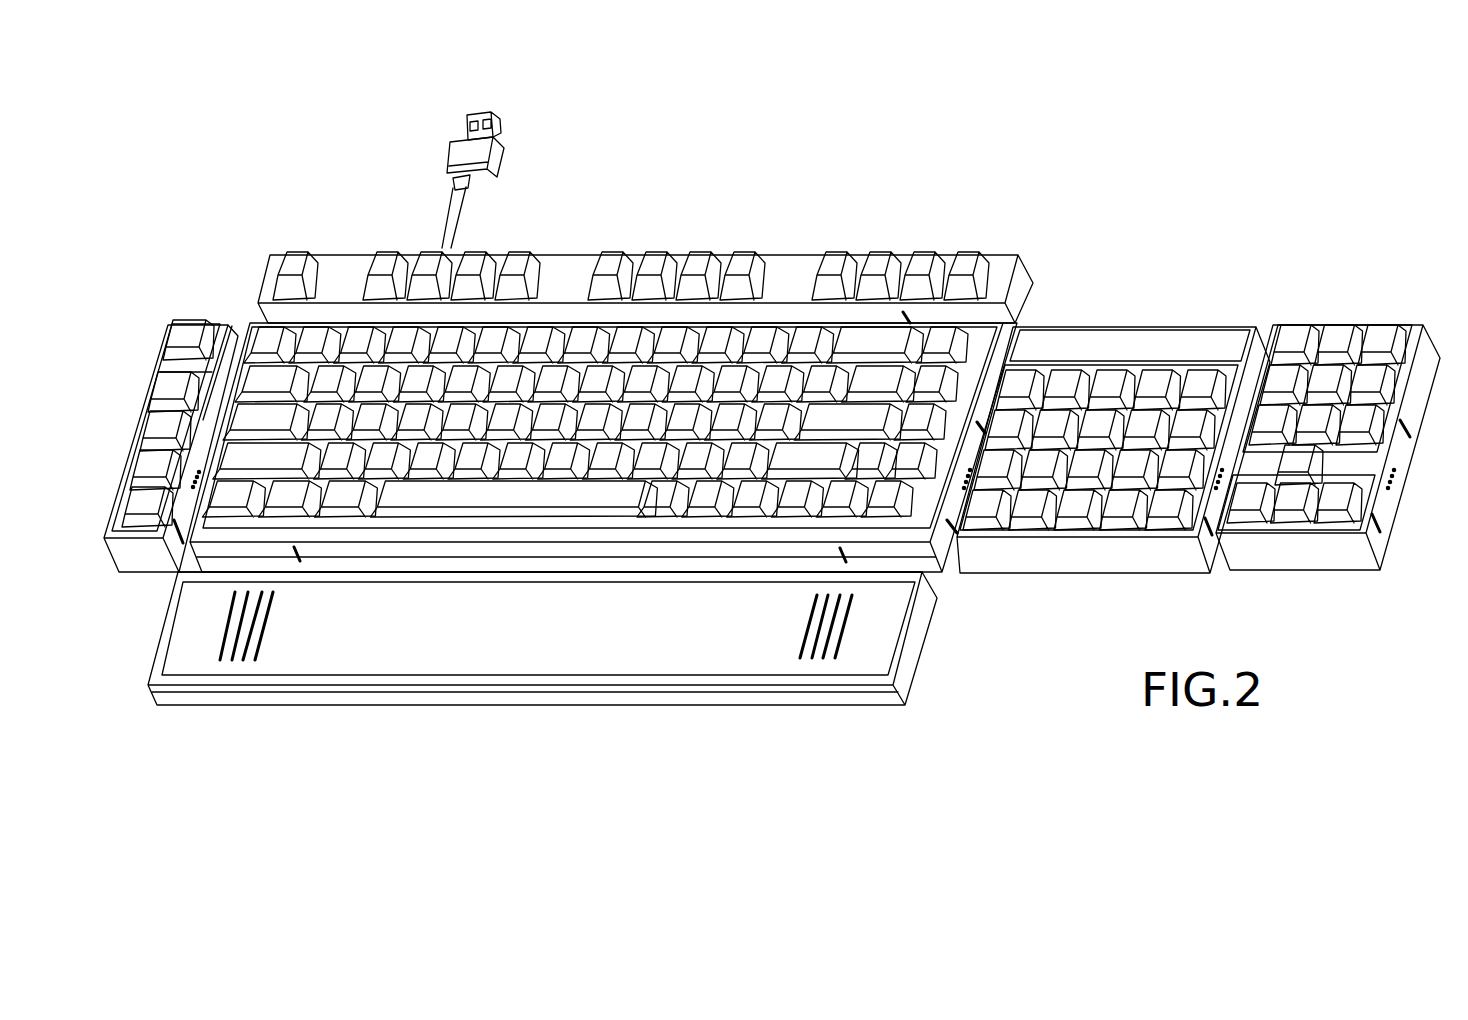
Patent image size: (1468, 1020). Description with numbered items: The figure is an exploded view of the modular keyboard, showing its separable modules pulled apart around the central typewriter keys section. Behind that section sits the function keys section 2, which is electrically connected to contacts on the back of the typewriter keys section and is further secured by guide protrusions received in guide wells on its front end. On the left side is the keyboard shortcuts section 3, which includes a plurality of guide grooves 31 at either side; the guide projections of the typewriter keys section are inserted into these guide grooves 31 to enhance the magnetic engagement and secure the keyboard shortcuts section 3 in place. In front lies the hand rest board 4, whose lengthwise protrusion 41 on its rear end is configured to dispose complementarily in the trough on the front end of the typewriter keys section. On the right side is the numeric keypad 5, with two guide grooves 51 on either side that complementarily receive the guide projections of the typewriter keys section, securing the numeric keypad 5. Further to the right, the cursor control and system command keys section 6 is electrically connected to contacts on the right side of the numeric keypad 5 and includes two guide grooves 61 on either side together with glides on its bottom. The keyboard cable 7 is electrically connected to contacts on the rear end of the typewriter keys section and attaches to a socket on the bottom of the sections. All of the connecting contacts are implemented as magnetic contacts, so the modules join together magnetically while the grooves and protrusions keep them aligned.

The function keys section 2 is at (796, 280).
The keyboard shortcuts section 3 is at (160, 408).
The guide grooves 31 is at (200, 416).
The hand rest board 4 is at (582, 668).
The lengthwise protrusion 41 is at (893, 574).
The numeric keypad 5 is at (1121, 473).
The guide grooves 51 is at (1210, 537).
The cursor control and system command keys section 6 is at (1340, 481).
The guide grooves 61 is at (1380, 519).
The keyboard cable 7 is at (501, 153).